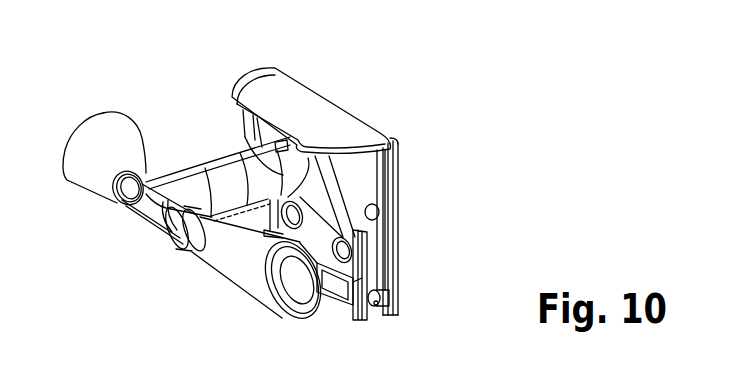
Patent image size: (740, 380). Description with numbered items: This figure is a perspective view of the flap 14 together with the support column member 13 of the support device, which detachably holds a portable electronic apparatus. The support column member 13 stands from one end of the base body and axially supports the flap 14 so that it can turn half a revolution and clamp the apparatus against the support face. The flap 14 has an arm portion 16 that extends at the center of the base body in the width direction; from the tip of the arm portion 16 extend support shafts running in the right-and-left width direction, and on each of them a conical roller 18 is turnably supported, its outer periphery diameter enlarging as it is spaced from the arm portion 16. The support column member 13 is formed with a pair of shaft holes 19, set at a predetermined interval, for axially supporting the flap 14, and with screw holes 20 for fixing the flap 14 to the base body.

The support column member 13 is at (390, 138).
The flap 14 is at (262, 181).
The arm portion 16 is at (205, 177).
The conical roller 18 is at (80, 175).
The shaft holes 19 is at (379, 207).
The screw holes 20 is at (358, 278).